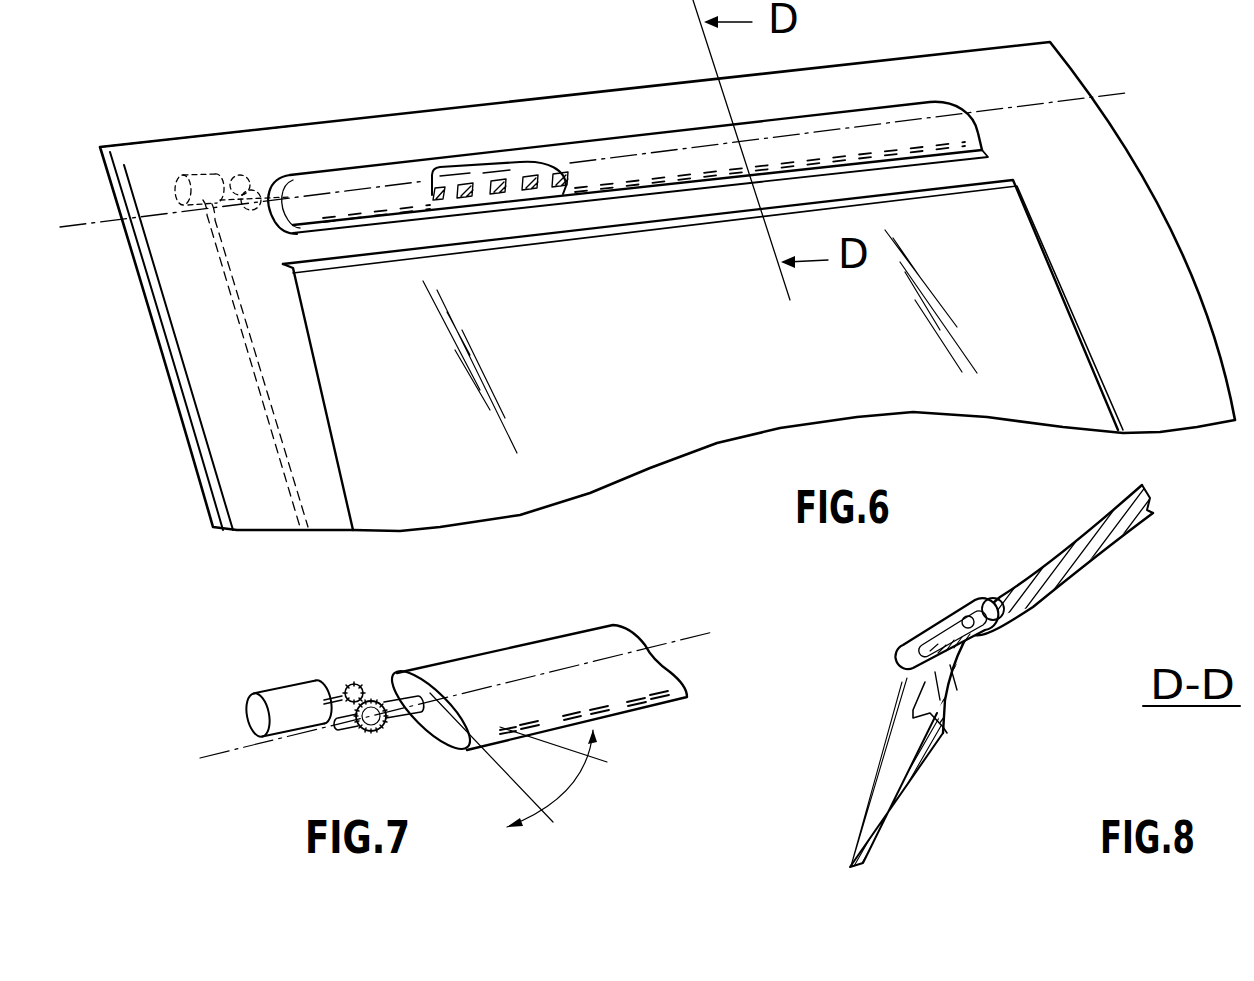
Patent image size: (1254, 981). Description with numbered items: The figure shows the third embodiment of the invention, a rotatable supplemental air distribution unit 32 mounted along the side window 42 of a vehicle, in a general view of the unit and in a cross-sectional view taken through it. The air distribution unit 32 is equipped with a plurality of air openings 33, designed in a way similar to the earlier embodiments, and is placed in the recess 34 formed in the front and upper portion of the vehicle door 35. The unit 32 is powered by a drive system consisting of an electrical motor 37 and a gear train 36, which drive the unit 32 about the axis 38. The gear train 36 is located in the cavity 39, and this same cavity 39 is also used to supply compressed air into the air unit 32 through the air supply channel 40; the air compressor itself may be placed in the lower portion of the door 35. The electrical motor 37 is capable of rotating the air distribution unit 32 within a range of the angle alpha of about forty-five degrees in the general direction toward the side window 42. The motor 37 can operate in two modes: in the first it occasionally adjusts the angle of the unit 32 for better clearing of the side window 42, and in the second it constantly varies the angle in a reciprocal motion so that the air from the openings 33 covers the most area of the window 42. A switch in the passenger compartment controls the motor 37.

In FIG. 6, the supplemental air distribution unit 32 is at (883, 143).
In FIG. 8, the supplemental air distribution unit 32 is at (962, 600).
In FIG. 6, the air openings 33 is at (517, 200).
In FIG. 8, the air openings 33 is at (893, 680).
In FIG. 6, the recess 34 is at (297, 233).
In FIG. 6, the vehicle door 35 is at (1143, 288).
In FIG. 8, the vehicle door 35 is at (1020, 603).
In FIG. 7, the gear train 36 is at (374, 701).
In FIG. 7, the electrical motor 37 is at (292, 698).
In FIG. 6, the axis 38 is at (985, 103).
In FIG. 7, the cavity 39 is at (340, 723).
In FIG. 6, the air supply channel 40 is at (477, 183).
In FIG. 8, the air supply channel 40 is at (940, 637).
In FIG. 6, the side window 42 is at (505, 472).
In FIG. 8, the side window 42 is at (898, 800).